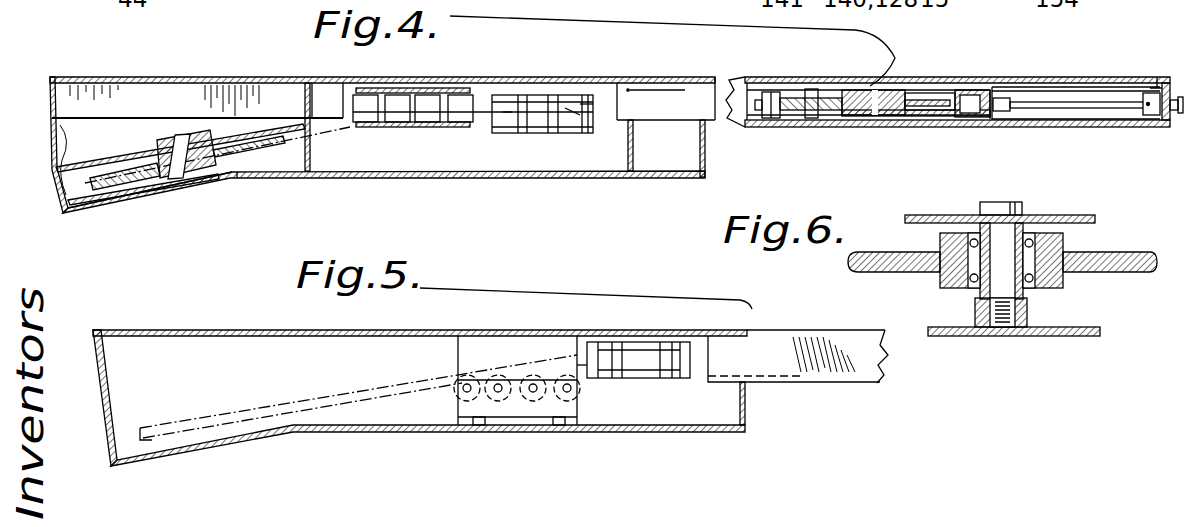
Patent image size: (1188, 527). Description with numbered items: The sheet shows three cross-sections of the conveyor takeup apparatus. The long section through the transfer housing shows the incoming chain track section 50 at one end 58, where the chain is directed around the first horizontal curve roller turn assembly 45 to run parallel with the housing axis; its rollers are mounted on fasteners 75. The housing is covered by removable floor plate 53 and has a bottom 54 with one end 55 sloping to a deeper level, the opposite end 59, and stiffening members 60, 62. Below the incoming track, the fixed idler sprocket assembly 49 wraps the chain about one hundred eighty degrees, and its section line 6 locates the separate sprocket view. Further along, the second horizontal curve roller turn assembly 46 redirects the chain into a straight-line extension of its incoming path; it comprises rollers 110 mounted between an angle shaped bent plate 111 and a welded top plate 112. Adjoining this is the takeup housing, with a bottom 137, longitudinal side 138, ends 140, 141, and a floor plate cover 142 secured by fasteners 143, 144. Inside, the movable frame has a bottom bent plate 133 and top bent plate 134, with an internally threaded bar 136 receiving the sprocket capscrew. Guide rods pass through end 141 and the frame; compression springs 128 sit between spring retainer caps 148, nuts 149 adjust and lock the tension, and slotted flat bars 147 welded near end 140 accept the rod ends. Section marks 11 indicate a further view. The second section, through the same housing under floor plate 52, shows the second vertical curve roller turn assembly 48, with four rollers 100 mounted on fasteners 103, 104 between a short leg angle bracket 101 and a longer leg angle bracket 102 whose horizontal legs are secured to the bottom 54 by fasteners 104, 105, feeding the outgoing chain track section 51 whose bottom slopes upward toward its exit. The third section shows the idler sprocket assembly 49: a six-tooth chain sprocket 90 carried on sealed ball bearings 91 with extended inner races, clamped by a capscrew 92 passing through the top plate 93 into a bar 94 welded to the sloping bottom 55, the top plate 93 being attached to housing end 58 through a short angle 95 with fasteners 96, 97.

In FIG. 4, the first horizontal curve roller turn assembly 45 is at (428, 84).
In FIG. 4, the second horizontal curve roller turn assembly 46 is at (550, 101).
In FIG. 5, the second horizontal curve roller turn assembly 46 is at (625, 336).
In FIG. 5, the second vertical curve roller turn assembly 48 is at (522, 407).
In FIG. 6, the fixed idler sprocket assembly 49 is at (1122, 290).
In FIG. 4, the incoming chain track section 50 is at (40, 72).
In FIG. 5, the outgoing chain track section 51 is at (806, 380).
In FIG. 5, the floor plate 52 is at (530, 332).
In FIG. 4, the floor plate 53 is at (230, 60).
In FIG. 4, the bottom 54 is at (458, 170).
In FIG. 5, the bottom 54 is at (640, 432).
In FIG. 4, the sloping end of bottom 55 is at (110, 192).
In FIG. 6, the sloping end of bottom 55 is at (965, 338).
In FIG. 5, the housing end 58 is at (93, 355).
In FIG. 4, the housing end 59 is at (705, 142).
In FIG. 4, the stiffening member 60 is at (311, 176).
In FIG. 4, the stiffening member 62 is at (652, 152).
In FIG. 4, the fastener 75 is at (1030, 110).
In FIG. 4, the six-tooth chain sprocket 90 is at (233, 174).
In FIG. 6, the six-tooth chain sprocket 90 is at (882, 272).
In FIG. 6, the sealed ball bearing 91 is at (1063, 252).
In FIG. 6, the capscrew 92 is at (980, 205).
In FIG. 4, the top plate 93 is at (82, 167).
In FIG. 6, the top plate 93 is at (1085, 217).
In FIG. 6, the bar 94 is at (1022, 312).
In FIG. 4, the short angle 95 is at (73, 207).
In FIG. 4, the fastener 96 is at (171, 117).
In FIG. 4, the fastener 97 is at (72, 157).
In FIG. 5, the anti-friction bearing cylindrical roller 100 is at (495, 420).
In FIG. 5, the short leg angle bracket 101 is at (524, 430).
In FIG. 5, the longer leg angle bracket 102 is at (358, 368).
In FIG. 5, the fastener 103 is at (358, 368).
In FIG. 5, the fastener 104 is at (490, 385).
In FIG. 5, the fastener 105 is at (455, 400).
In FIG. 4, the anti-friction bearing cylindrical roller 110 is at (586, 116).
In FIG. 4, the angle shaped bent plate 111 is at (505, 134).
In FIG. 4, the top plate 112 is at (576, 106).
In FIG. 4, the compression spring 128 is at (916, 73).
In FIG. 4, the bottom bent plate 133 is at (842, 128).
In FIG. 4, the top bent plate 134 is at (931, 103).
In FIG. 4, the internally threaded bar 136 is at (970, 62).
In FIG. 4, the bottom 137 is at (1000, 120).
In FIG. 4, the longitudinal side 138 is at (1045, 95).
In FIG. 4, the housing end 140 is at (733, 93).
In FIG. 4, the housing end 141 is at (1164, 128).
In FIG. 4, the floor plate cover 142 is at (1088, 75).
In FIG. 4, the fastener 143 is at (1040, 50).
In FIG. 4, the fastener 144 is at (1088, 75).
In FIG. 4, the flat bar 147 is at (768, 128).
In FIG. 4, the spring retainer cap 148 is at (830, 96).
In FIG. 4, the nut 149 is at (1174, 114).
In FIG. 4, the section line 11 is at (333, 75).
In FIG. 4, the section line 6 is at (197, 210).